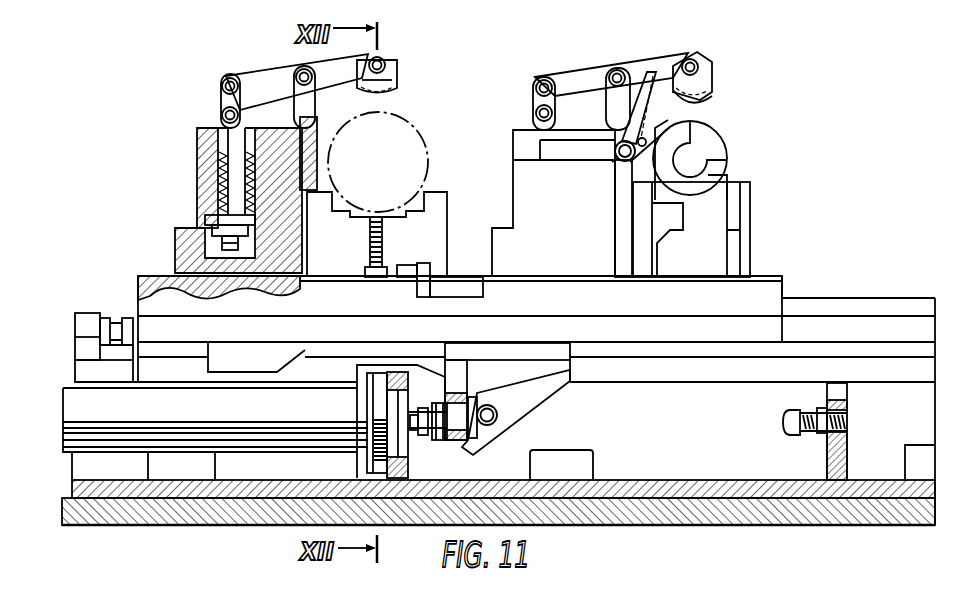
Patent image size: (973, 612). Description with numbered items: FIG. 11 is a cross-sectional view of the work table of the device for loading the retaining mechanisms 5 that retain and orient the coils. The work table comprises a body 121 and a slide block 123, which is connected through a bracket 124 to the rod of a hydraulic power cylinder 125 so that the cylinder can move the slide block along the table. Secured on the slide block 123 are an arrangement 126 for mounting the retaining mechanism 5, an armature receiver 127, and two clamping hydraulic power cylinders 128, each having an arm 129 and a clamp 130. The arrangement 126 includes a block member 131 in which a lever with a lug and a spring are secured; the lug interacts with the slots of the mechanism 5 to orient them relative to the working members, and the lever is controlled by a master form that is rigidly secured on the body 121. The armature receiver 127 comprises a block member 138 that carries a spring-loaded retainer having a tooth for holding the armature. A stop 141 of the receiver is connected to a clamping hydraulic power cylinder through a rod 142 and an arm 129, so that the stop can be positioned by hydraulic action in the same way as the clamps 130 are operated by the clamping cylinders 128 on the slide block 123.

The retaining mechanism 5 is at (420, 156).
The body 121 is at (88, 470).
The slide block 123 is at (773, 293).
The bracket 124 is at (513, 380).
The hydraulic power cylinder 125 is at (75, 408).
The arrangement for mounting the mechanism 126 is at (431, 121).
The armature receiver 127 is at (730, 126).
The clamping hydraulic power cylinder 128 is at (197, 181).
The arm 129 is at (255, 82).
The clamp 130 is at (397, 78).
The block member 131 is at (433, 253).
The block member 138 is at (740, 193).
The stop 141 is at (712, 97).
The rod 142 is at (653, 70).